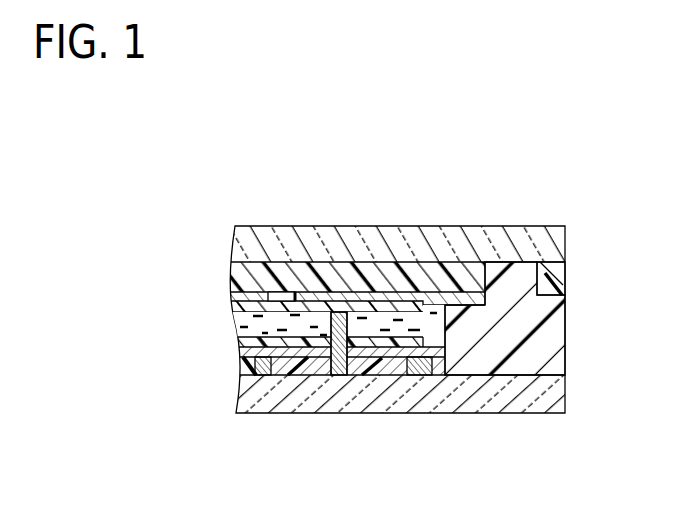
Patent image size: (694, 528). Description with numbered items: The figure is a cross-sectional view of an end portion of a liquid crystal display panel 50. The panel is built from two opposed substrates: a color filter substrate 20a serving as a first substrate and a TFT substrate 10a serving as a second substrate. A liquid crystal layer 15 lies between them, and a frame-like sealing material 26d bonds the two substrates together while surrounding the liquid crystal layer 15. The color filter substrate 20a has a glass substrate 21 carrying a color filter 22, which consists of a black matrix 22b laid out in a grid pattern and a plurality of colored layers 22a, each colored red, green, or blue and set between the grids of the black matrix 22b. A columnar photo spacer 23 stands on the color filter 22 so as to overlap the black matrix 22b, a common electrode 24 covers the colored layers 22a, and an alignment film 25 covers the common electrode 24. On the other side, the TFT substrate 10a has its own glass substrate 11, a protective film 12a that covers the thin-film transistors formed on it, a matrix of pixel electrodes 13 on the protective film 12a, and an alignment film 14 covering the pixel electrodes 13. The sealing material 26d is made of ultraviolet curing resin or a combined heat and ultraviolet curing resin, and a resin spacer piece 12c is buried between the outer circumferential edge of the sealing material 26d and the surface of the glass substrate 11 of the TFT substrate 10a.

The liquid crystal display panel 50 is at (251, 168).
The TFT substrate 10a is at (229, 226).
The glass substrate 11 is at (505, 240).
The protective film 12a is at (442, 275).
The spacer piece 12c is at (558, 278).
The pixel electrodes 13 is at (390, 303).
The alignment film 14 is at (310, 300).
The liquid crystal layer 15 is at (229, 310).
The color filter substrate 20a is at (229, 335).
The glass substrate 21 is at (492, 405).
The color filter 22 is at (385, 468).
The colored layers 22a is at (286, 365).
The black matrix 22b is at (341, 372).
The photo spacer 23 is at (345, 312).
The common electrode 24 is at (393, 353).
The alignment film 25 is at (427, 343).
The sealing material 26d is at (555, 328).